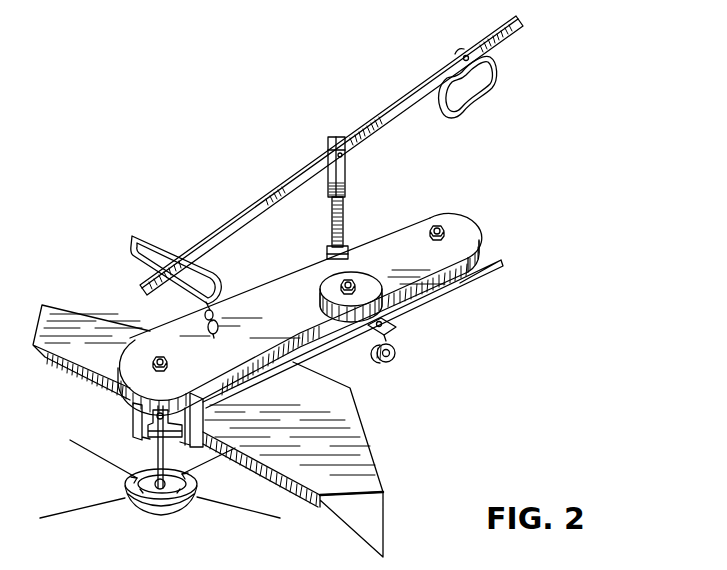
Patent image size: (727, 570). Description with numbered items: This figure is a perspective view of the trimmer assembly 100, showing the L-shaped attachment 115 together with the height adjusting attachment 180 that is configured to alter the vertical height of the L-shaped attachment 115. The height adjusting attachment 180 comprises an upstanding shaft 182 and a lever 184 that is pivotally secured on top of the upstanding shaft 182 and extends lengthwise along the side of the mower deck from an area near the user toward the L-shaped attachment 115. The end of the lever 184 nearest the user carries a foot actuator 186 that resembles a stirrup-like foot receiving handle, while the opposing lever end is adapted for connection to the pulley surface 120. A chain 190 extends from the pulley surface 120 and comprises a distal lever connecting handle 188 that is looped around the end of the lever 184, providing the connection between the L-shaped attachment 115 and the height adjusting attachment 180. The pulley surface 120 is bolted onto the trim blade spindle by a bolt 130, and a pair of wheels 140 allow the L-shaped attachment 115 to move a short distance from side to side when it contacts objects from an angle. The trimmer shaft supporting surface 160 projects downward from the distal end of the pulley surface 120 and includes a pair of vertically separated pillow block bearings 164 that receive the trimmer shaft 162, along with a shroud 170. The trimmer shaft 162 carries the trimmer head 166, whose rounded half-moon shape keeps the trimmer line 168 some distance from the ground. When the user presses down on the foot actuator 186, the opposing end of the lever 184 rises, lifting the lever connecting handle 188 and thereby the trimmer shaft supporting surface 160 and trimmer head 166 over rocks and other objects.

The trimmer assembly 100 is at (566, 188).
The L-shaped attachment 115 is at (478, 350).
The pulley surface 120 is at (464, 237).
The bolt 130 is at (438, 226).
The wheels 140 is at (392, 358).
The trimmer shaft supporting surface 160 is at (218, 416).
The trimmer shaft 162 is at (157, 452).
The pillow block bearings 164 is at (149, 427).
The trimmer head 166 is at (172, 502).
The trimmer line 168 is at (50, 512).
The shroud 170 is at (356, 433).
The height adjusting attachment 180 is at (370, 72).
The upstanding shaft 182 is at (345, 208).
The lever 184 is at (281, 184).
The foot actuator 186 is at (496, 80).
The lever connecting handle 188 is at (135, 236).
The chain 190 is at (222, 303).